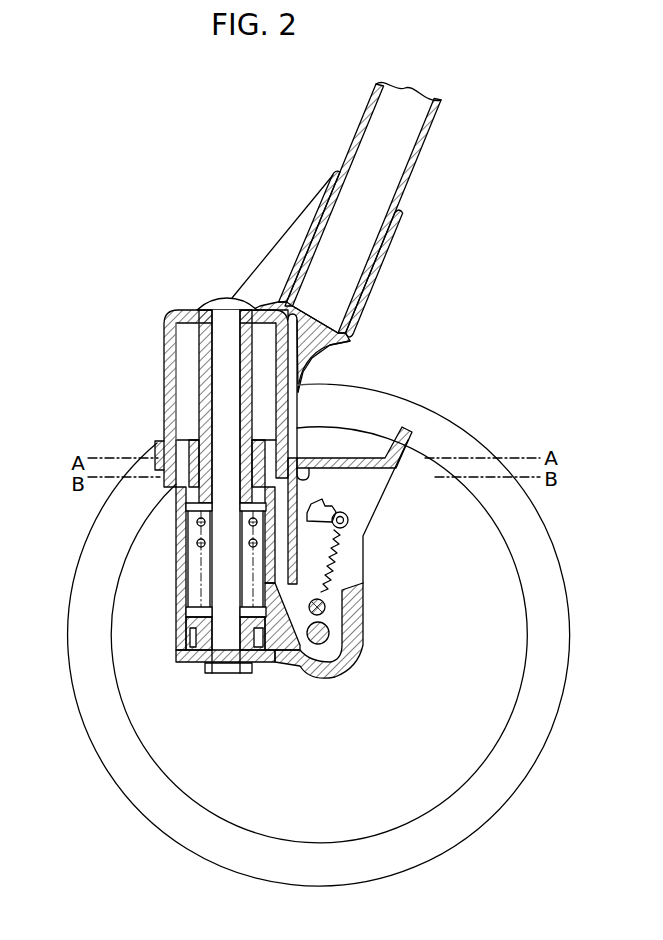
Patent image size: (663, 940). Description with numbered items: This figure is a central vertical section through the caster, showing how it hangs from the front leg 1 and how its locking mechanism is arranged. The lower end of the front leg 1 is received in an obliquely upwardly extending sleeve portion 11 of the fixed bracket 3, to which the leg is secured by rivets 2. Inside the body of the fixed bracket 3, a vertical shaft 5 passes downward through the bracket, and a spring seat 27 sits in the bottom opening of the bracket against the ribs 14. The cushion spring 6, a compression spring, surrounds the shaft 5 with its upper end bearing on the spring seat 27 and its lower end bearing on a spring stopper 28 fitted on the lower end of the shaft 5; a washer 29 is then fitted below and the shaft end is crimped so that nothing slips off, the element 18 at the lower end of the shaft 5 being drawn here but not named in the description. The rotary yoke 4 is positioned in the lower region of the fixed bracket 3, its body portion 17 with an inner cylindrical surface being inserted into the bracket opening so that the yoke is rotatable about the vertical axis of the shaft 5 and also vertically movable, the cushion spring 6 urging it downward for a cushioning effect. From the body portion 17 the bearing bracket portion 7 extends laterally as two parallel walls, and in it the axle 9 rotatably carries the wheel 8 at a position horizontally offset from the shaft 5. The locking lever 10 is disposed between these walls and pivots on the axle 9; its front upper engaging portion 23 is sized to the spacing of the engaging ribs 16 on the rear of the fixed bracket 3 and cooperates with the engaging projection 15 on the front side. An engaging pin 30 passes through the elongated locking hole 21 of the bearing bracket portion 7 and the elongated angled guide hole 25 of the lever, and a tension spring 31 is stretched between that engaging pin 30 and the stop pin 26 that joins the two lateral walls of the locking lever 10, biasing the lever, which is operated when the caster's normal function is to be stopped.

The front leg 1 is at (422, 146).
The rivets 2 is at (302, 240).
The fixed bracket 3 is at (158, 337).
The rotary yoke 4 is at (176, 560).
The vertical shaft 5 is at (223, 298).
The cushion spring 6 is at (182, 500).
The bearing bracket portion 7 is at (365, 608).
The wheel 8 is at (567, 571).
The axle 9 is at (323, 632).
The locking lever 10 is at (378, 425).
The sleeve portion 11 is at (398, 225).
The ribs 14 is at (182, 375).
The engaging projection 15 is at (158, 445).
The engaging ribs 16 is at (312, 398).
The body portion 17 is at (180, 590).
The nut 18 is at (263, 670).
The elongated locking hole 21 is at (426, 518).
The engaging portion 23 is at (355, 410).
The elongated angled guide hole 25 is at (350, 500).
The stop pin 26 is at (330, 604).
The spring seat 27 is at (165, 452).
The spring stopper 28 is at (185, 636).
The washer 29 is at (196, 672).
The engaging pin 30 is at (350, 522).
The tension spring 31 is at (345, 555).